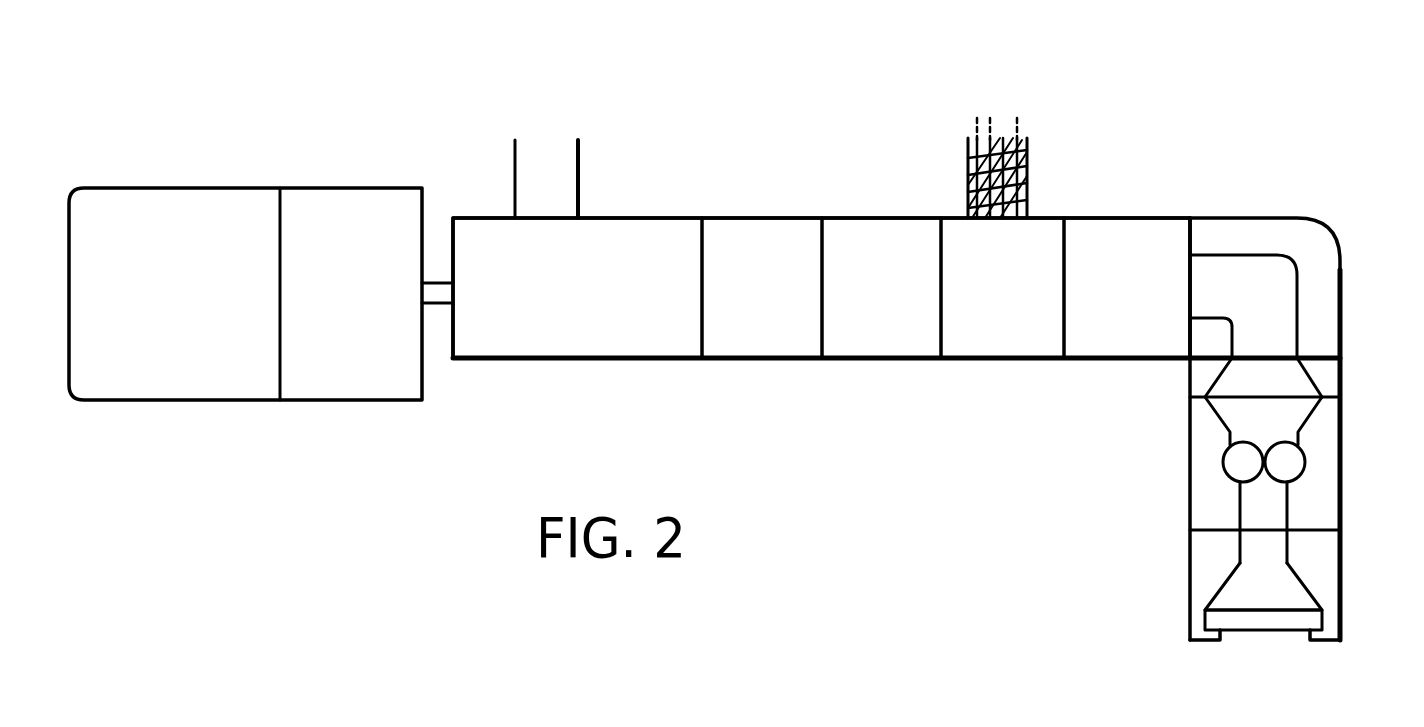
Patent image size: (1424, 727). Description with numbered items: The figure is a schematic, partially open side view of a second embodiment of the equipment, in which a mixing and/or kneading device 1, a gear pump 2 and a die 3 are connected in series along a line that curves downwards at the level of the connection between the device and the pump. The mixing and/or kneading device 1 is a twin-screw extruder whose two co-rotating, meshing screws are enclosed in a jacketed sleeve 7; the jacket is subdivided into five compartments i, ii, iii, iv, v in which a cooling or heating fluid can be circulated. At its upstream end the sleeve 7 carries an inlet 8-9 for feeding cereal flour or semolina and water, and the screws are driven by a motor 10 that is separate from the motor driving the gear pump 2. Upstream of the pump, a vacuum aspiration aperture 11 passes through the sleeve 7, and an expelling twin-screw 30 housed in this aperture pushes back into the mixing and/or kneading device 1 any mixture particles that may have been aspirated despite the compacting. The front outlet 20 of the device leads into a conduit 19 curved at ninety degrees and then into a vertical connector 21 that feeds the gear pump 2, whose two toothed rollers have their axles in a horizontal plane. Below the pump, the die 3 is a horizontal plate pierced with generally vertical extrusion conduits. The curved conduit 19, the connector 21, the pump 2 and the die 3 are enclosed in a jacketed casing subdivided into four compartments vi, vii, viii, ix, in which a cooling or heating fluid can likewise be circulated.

The mixing and/or kneading device 1 is at (782, 164).
The gear pump 2 is at (1292, 458).
The die 3 is at (1300, 622).
The jacketed sleeve 7 is at (627, 218).
The inlet 8-9 is at (545, 153).
The motor 10 is at (170, 188).
The vacuum aspiration aperture 11 is at (998, 142).
The conduit 19 is at (1258, 292).
The front outlet 20 is at (1190, 270).
The vertical connector 21 is at (1278, 375).
The expelling twin-screw 30 is at (1003, 186).
The compartment i is at (597, 360).
The compartment ii is at (763, 360).
The compartment iii is at (892, 360).
The compartment iv is at (998, 360).
The compartment v is at (1108, 360).
The compartment vi is at (1200, 218).
The compartment vii is at (1190, 383).
The compartment viii is at (1190, 473).
The compartment ix is at (1190, 572).